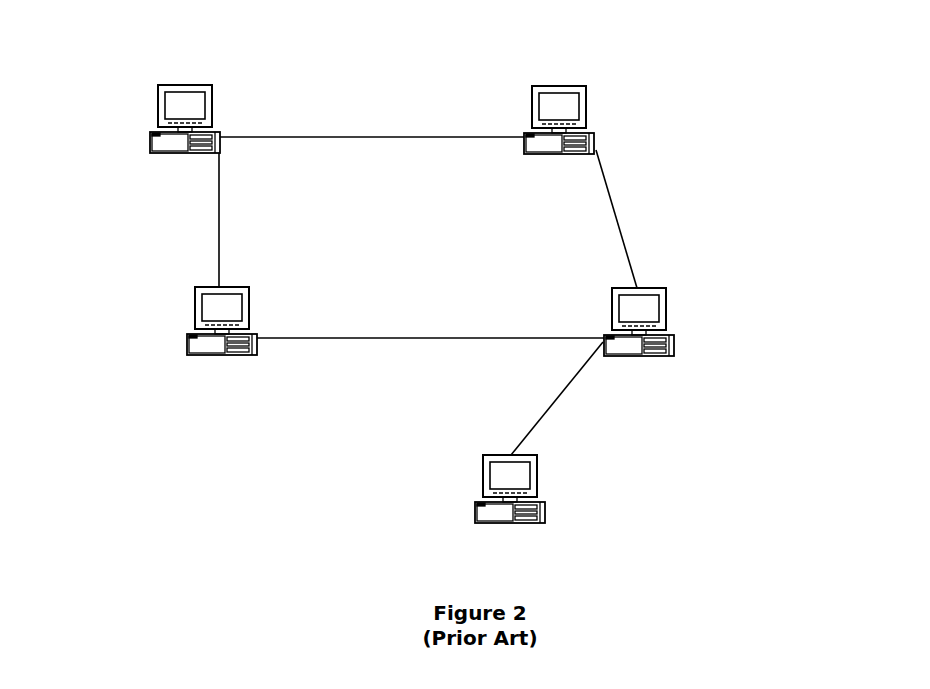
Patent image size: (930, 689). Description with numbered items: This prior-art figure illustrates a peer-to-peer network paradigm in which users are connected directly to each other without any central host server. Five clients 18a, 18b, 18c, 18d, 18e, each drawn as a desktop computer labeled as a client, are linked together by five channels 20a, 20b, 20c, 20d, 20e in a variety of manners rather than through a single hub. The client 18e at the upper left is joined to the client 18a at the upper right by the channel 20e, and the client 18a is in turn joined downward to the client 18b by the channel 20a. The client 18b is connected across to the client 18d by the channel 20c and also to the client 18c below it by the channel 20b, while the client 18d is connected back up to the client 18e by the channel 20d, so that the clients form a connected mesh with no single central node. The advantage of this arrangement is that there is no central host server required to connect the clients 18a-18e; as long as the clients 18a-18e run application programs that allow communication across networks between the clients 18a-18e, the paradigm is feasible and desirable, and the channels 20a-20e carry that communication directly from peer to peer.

The client 18a is at (558, 86).
The client 18b is at (674, 334).
The client 18c is at (545, 503).
The client 18d is at (187, 337).
The client 18e is at (150, 132).
The channel 20a is at (611, 200).
The channel 20b is at (550, 413).
The channel 20c is at (353, 339).
The channel 20d is at (219, 221).
The channel 20e is at (319, 136).